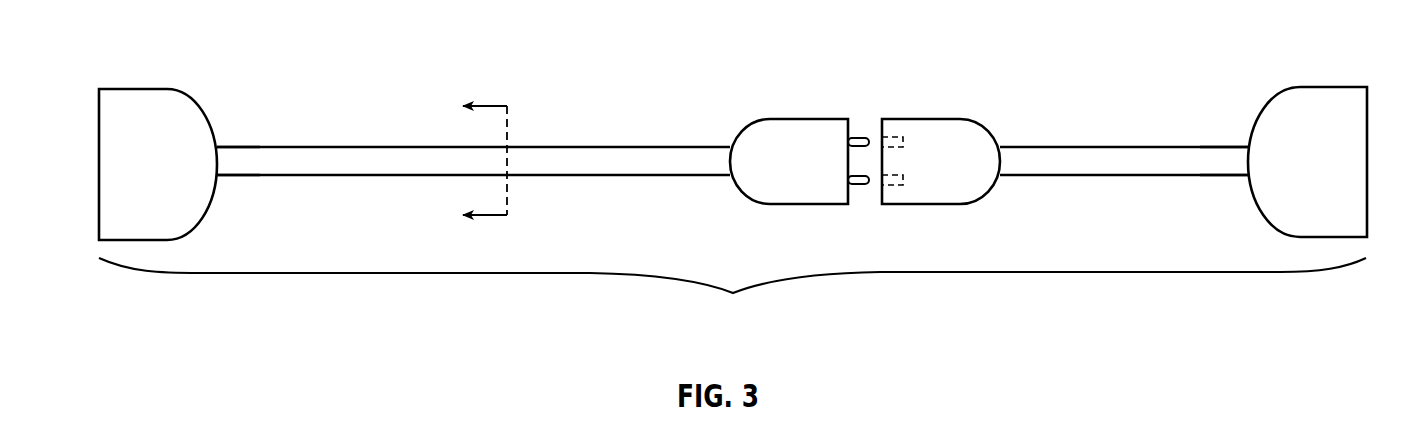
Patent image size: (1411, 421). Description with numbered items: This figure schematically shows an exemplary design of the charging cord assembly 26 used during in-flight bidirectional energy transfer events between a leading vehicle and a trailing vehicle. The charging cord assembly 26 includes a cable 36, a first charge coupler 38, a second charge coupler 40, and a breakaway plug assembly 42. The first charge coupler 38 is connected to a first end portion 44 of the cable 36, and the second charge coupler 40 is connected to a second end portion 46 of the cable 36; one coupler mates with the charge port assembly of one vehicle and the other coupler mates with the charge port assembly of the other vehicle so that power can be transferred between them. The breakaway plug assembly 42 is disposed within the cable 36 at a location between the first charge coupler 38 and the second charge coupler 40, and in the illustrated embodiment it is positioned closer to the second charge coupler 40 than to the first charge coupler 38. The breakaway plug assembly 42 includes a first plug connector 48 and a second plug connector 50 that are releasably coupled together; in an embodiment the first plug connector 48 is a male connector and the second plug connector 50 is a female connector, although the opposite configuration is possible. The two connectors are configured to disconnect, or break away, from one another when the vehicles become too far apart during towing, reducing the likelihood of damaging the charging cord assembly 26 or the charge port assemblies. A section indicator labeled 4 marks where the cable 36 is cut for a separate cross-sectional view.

The charging cord assembly 26 is at (733, 293).
The cable 36 is at (673, 146).
The first charge coupler 38 is at (132, 97).
The second charge coupler 40 is at (1337, 100).
The breakaway plug assembly 42 is at (865, 152).
The first end portion 44 is at (234, 141).
The second end portion 46 is at (1231, 126).
The first plug connector 48 is at (770, 193).
The second plug connector 50 is at (952, 195).
The section line 4- 4 is at (474, 164).